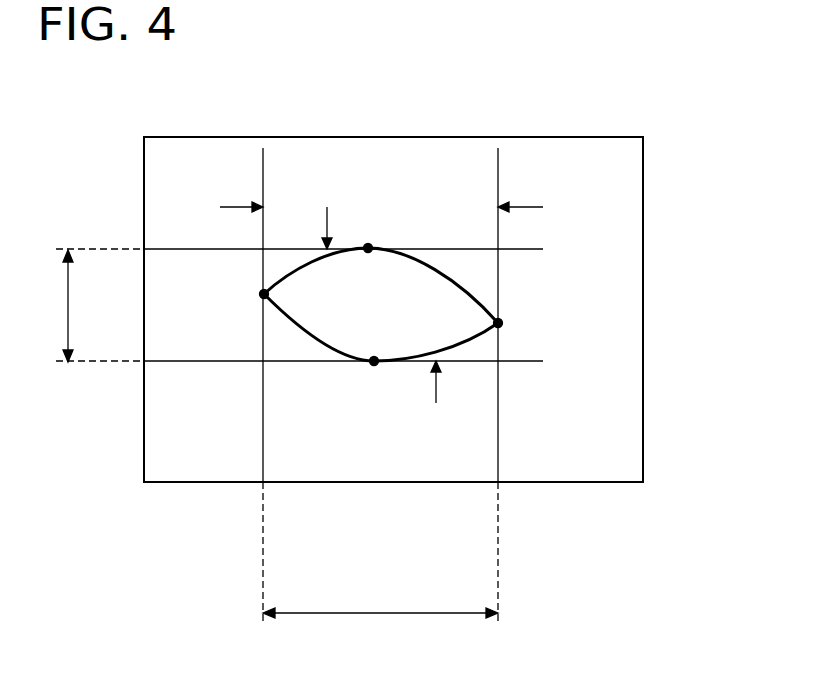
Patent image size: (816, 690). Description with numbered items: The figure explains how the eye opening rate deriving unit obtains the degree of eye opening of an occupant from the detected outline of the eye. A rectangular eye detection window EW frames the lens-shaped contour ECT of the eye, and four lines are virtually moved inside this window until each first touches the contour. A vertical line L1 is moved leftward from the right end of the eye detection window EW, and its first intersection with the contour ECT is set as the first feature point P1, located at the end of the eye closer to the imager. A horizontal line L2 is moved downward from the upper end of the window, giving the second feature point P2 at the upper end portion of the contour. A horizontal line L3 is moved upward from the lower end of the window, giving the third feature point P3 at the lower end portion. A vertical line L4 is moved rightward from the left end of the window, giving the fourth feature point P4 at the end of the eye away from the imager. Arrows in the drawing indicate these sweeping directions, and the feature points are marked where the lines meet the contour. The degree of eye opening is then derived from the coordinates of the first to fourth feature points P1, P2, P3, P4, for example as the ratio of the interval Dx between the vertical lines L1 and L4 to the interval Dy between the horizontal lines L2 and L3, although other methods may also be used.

The eye detection window EW is at (643, 205).
The vertical line L1 is at (498, 415).
The horizontal line L2 is at (293, 249).
The horizontal line L3 is at (466, 361).
The vertical line L4 is at (263, 415).
The first feature point P1 is at (498, 323).
The second feature point P2 is at (368, 248).
The third feature point P3 is at (374, 361).
The fourth feature point P4 is at (264, 294).
The contour of the eyes ECT is at (440, 274).
The interval between the vertical lines Dx is at (380, 630).
The interval between the horizontal lines Dy is at (46, 306).